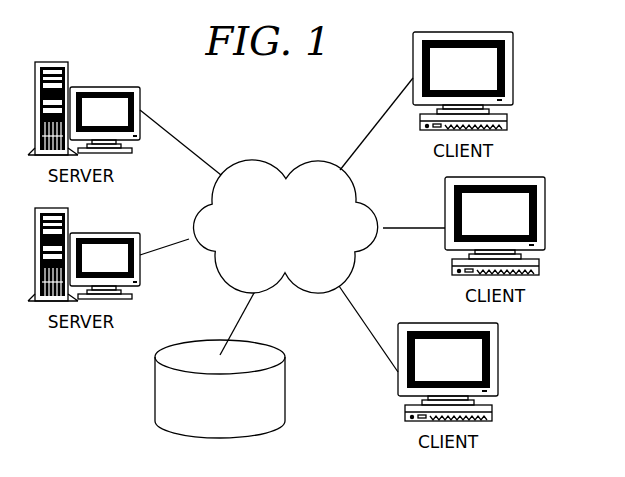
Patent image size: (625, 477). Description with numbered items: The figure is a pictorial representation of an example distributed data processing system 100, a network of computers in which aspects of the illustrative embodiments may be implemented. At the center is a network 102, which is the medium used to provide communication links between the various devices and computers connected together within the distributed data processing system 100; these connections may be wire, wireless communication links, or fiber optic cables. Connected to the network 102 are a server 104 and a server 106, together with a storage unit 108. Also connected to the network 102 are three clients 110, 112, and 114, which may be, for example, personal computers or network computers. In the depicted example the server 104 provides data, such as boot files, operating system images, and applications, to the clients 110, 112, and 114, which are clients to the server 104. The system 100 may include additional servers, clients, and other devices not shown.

The distributed data processing system 100 is at (112, 369).
The network 102 is at (253, 160).
The server 104 is at (103, 87).
The server 106 is at (103, 233).
The storage unit 108 is at (285, 380).
The client 110 is at (513, 75).
The client 112 is at (545, 220).
The client 114 is at (497, 365).